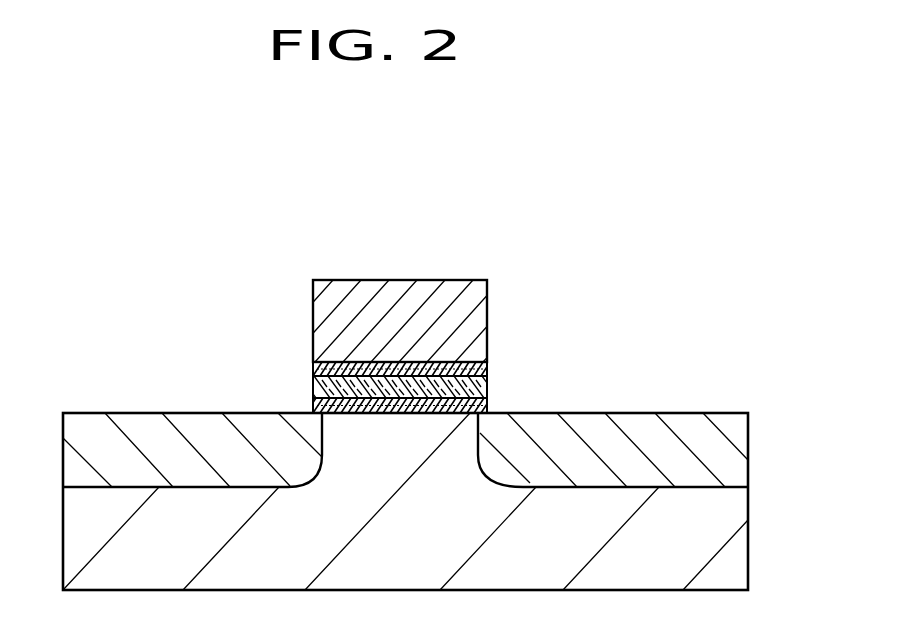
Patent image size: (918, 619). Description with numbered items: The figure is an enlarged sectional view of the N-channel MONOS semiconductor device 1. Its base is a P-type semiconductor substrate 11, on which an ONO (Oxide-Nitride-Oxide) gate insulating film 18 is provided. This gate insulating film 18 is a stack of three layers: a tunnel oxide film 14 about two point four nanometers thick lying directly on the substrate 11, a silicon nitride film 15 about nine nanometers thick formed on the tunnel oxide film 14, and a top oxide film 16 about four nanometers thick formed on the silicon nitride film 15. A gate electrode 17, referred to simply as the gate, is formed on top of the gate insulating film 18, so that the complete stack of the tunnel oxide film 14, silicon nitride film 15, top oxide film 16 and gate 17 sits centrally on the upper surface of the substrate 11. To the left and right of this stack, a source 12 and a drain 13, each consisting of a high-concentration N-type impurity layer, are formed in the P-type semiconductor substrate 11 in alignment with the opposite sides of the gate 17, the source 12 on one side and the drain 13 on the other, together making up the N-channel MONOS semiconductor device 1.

The N-channel MONOS semiconductor device 1 is at (253, 232).
The P-type semiconductor substrate 11 is at (733, 540).
The source 12 is at (146, 433).
The drain 13 is at (725, 433).
The tunnel oxide film 14 is at (487, 404).
The silicon nitride film 15 is at (487, 384).
The top oxide film 16 is at (487, 364).
The gate electrode 17 is at (415, 290).
The ONO gate insulating film 18 is at (603, 260).